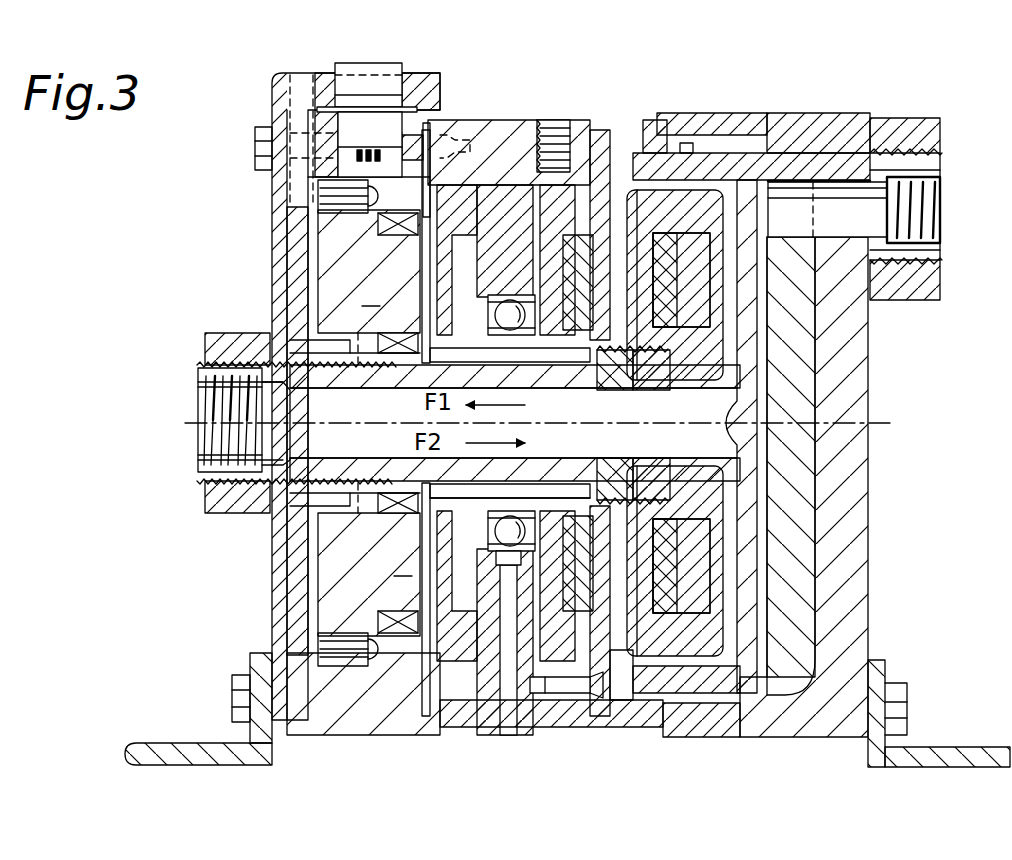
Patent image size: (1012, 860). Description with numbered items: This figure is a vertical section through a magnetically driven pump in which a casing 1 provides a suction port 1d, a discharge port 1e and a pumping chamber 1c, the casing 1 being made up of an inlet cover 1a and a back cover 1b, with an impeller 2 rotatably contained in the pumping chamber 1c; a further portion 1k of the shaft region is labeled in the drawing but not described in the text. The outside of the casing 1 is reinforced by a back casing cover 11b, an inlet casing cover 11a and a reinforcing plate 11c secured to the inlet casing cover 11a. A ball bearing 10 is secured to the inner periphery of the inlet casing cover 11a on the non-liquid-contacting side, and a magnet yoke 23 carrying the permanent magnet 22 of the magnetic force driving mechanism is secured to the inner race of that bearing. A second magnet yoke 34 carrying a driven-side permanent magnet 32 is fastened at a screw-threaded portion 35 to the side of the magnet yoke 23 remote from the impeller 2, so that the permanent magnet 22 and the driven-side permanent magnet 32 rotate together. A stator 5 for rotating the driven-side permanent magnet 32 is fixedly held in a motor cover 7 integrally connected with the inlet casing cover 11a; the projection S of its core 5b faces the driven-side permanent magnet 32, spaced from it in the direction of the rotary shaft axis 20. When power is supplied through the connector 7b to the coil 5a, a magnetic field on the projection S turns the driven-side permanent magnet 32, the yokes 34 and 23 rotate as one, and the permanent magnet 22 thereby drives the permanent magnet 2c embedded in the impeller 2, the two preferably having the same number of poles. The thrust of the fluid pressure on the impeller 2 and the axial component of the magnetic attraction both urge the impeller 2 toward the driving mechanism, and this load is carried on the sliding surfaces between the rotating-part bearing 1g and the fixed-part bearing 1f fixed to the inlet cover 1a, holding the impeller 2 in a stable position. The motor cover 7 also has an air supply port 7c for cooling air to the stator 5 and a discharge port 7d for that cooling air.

The casing 1 is at (740, 695).
The inlet cover 1a is at (665, 170).
The back cover 1b is at (775, 150).
The pumping chamber 1c is at (762, 405).
The suction port 1d is at (200, 400).
The discharge port 1e is at (945, 228).
The fixed-part bearing 1f is at (600, 382).
The rotating-part bearing 1g is at (660, 382).
The shaft bore 1k is at (513, 423).
The impeller 2 is at (693, 632).
The permanent magnet 2c is at (680, 303).
The stator 5 is at (340, 685).
The coil 5a is at (395, 630).
The core 5b is at (365, 601).
The motor cover 7 is at (366, 740).
The connector 7b is at (404, 63).
The air supply port 7c is at (306, 73).
The discharge port of the cooling air 7d is at (555, 118).
The ball bearing 10 is at (505, 292).
The inlet casing cover 11a is at (587, 727).
The back casing cover 11b is at (868, 514).
The reinforcing plate 11c is at (608, 648).
The rotary shaft axis 20 is at (888, 417).
The permanent magnet of the magnetic force driving mechanism 22 is at (563, 595).
The magnet yoke 23 is at (585, 180).
The driven-side permanent magnet 32 is at (463, 645).
The magnet yoke 34 is at (472, 680).
The screw-threaded portion 35 is at (505, 490).